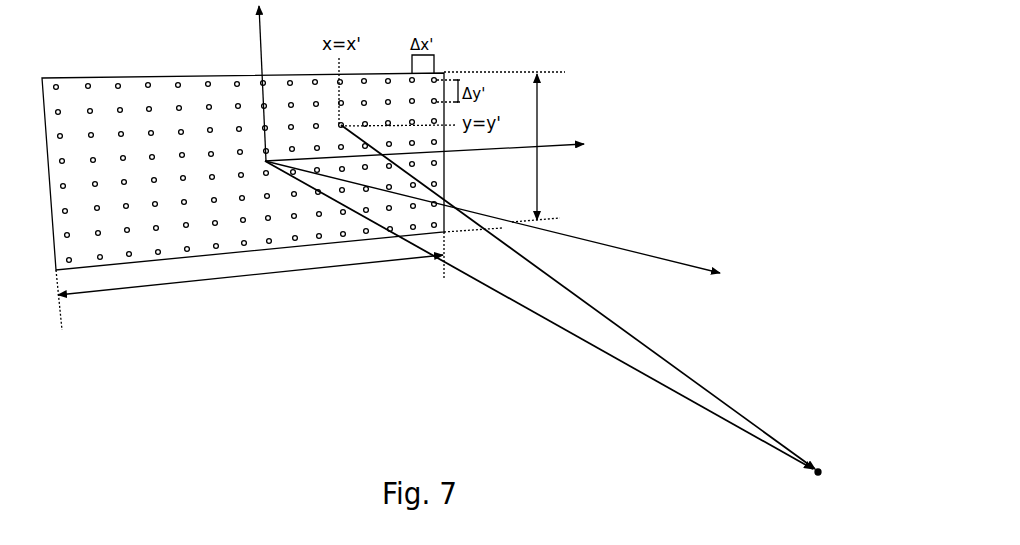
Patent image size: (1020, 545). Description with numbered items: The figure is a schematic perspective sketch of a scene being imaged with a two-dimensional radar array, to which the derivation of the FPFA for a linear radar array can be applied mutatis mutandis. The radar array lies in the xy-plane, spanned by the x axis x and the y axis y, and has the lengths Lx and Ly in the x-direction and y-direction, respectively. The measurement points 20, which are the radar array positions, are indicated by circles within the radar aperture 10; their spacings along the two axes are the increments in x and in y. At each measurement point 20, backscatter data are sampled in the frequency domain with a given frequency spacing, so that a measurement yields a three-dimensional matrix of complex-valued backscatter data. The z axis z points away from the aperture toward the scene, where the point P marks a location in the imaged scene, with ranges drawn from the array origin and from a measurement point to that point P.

The radar aperture 10 is at (136, 77).
The measurement points 20 is at (208, 84).
The field point P is at (550, 306).
The array width Lx is at (250, 281).
The array height Ly is at (524, 147).
The x axis x is at (424, 142).
The y axis y is at (253, 81).
The z axis z is at (492, 217).